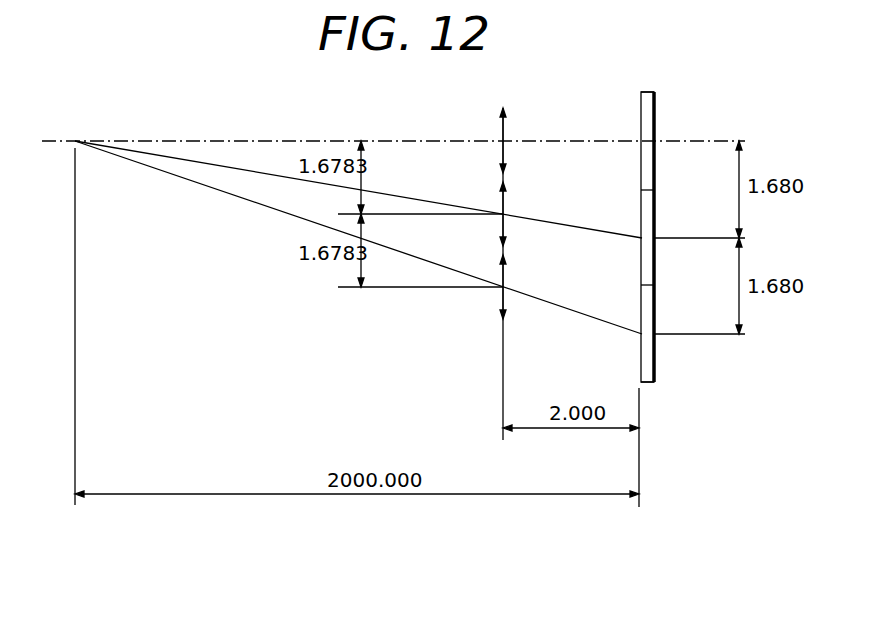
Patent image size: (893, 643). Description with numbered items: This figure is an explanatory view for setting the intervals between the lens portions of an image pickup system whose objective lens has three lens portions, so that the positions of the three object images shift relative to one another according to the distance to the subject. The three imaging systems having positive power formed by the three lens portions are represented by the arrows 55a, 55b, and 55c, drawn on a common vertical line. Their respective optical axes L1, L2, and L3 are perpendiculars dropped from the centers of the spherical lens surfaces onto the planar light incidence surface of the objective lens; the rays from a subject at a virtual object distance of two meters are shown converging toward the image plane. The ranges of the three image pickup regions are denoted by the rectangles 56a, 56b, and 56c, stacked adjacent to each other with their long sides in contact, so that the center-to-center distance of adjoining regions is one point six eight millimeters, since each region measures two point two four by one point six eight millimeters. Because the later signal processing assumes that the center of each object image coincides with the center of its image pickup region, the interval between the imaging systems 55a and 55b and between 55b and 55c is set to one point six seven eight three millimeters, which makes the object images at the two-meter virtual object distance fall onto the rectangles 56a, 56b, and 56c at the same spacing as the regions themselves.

The imaging system 55a is at (500, 131).
The imaging system 55b is at (501, 201).
The imaging system 55c is at (499, 296).
The range of image pickup region 56a is at (645, 114).
The range of image pickup region 56b is at (645, 210).
The range of image pickup region 56c is at (645, 351).
The optical axis L1 is at (205, 141).
The optical axis L2 is at (433, 214).
The optical axis L3 is at (373, 287).